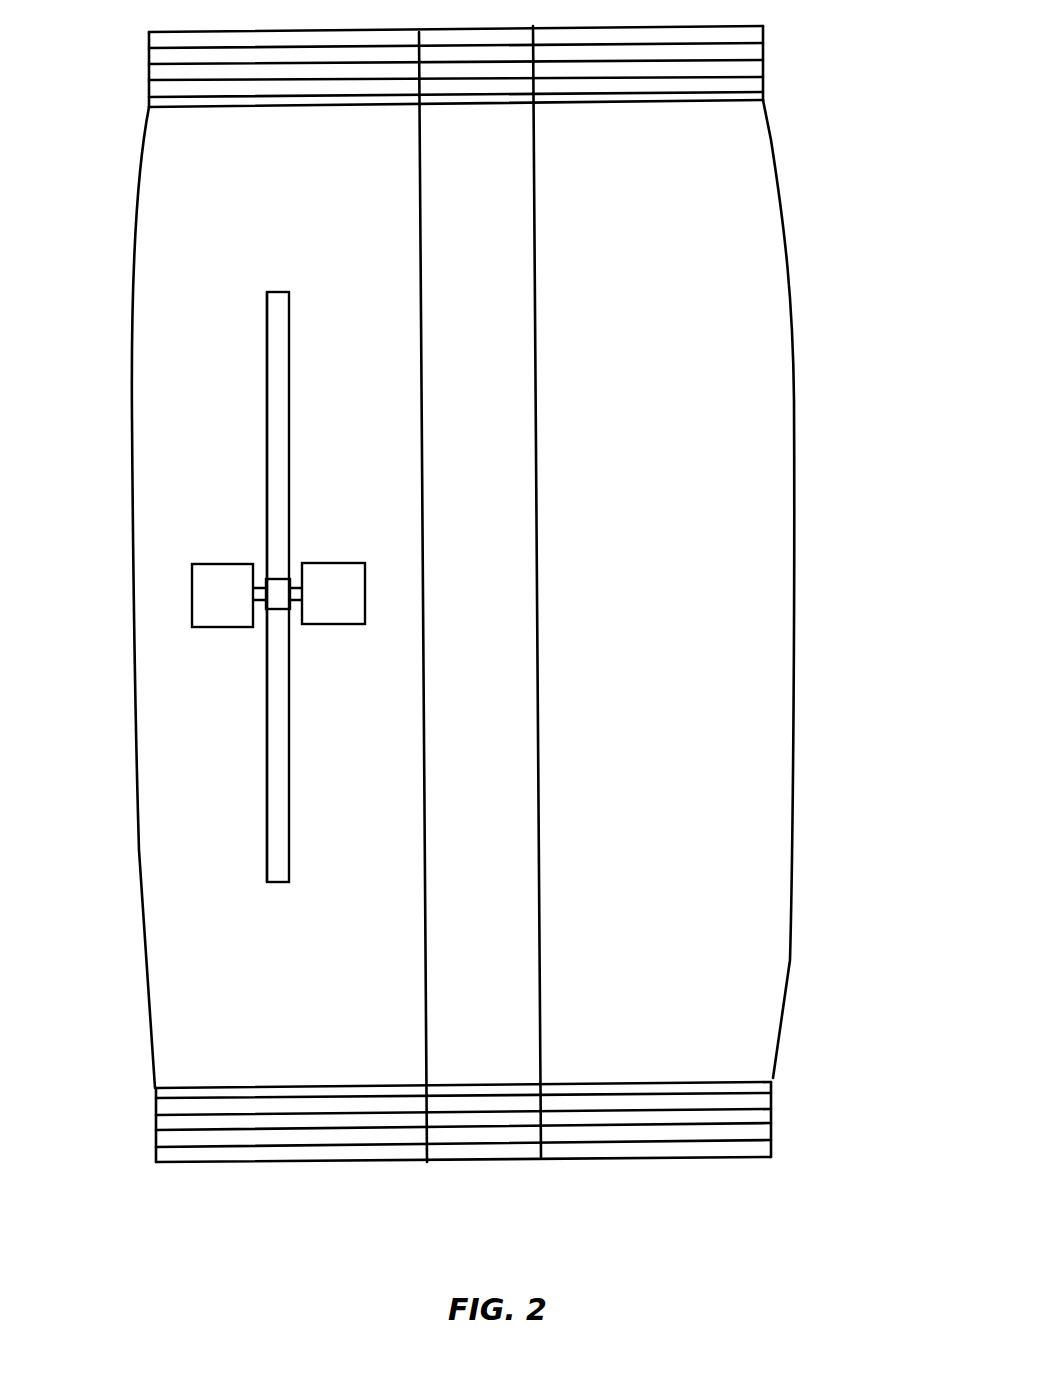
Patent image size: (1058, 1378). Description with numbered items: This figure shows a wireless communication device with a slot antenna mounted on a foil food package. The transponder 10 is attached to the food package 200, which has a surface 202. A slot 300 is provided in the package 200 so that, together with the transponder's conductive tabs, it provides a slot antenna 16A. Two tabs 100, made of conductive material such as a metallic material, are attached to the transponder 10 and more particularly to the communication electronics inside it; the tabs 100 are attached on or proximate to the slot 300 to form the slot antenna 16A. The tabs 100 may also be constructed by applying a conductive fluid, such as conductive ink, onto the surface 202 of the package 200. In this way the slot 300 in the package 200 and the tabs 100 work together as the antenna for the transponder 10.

The food package 200 is at (474, 594).
The surface 202 is at (169, 196).
The slot 300 is at (275, 345).
The slot antenna 16A is at (264, 418).
The transponder 10 is at (278, 589).
The tabs 100 is at (210, 598).